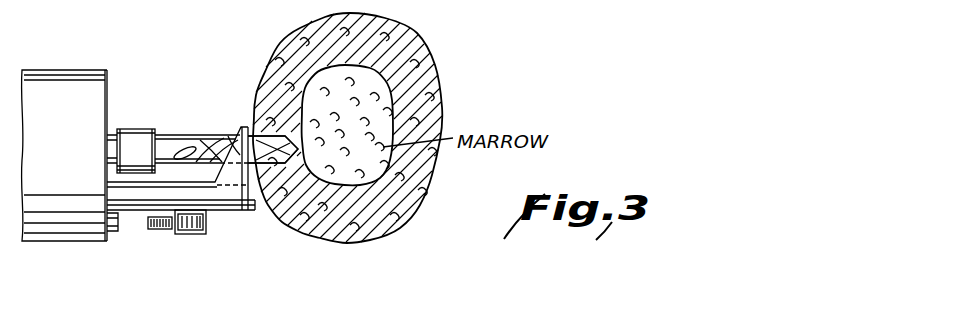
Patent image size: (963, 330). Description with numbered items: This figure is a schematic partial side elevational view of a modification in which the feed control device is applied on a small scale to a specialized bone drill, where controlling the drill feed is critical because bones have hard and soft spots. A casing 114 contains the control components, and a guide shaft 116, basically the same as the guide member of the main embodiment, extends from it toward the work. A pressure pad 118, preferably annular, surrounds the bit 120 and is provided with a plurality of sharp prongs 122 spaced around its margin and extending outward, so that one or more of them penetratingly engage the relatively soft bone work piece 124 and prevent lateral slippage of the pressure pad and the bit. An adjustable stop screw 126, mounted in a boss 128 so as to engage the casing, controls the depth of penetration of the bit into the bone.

The casing 114 is at (70, 155).
The guide shaft 116 is at (141, 210).
The pressure pad 118 is at (242, 128).
The bit 120 is at (172, 135).
The sharp prongs 122 is at (262, 92).
The bone work piece 124 is at (424, 72).
The adjustable stop screw 126 is at (162, 229).
The boss 128 is at (192, 233).